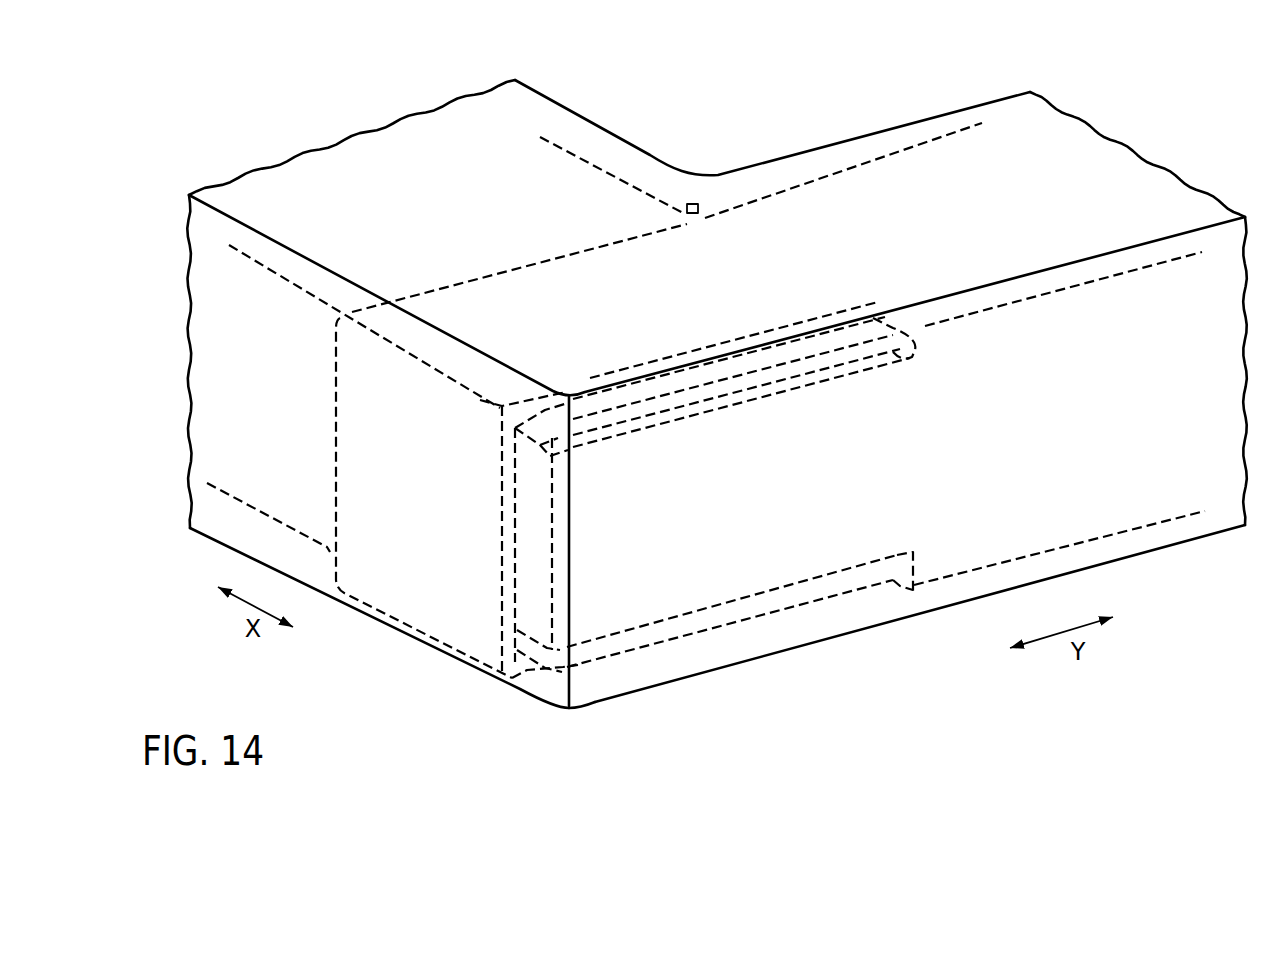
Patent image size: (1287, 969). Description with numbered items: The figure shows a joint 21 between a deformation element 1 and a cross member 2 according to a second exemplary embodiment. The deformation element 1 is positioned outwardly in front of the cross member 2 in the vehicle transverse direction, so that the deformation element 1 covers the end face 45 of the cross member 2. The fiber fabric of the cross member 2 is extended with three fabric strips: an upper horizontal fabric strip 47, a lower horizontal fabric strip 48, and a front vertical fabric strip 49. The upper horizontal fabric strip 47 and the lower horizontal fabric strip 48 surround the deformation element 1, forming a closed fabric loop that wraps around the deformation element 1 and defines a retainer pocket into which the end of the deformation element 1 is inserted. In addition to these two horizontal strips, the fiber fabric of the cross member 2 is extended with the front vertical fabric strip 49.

The deformation element 1 is at (587, 114).
The cross member 2 is at (909, 116).
The joint 21 is at (551, 722).
The end face 45 is at (692, 214).
The upper horizontal fabric strip 47 is at (520, 268).
The lower horizontal fabric strip 48 is at (523, 673).
The front vertical fabric strip 49 is at (777, 588).